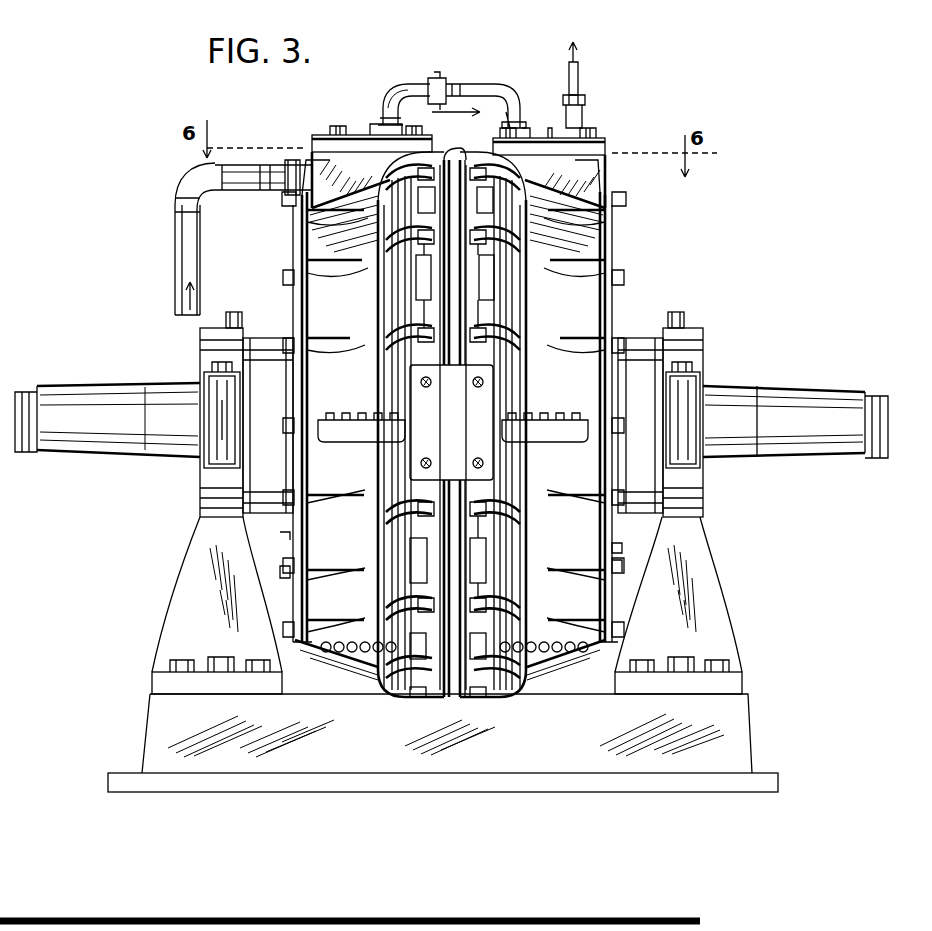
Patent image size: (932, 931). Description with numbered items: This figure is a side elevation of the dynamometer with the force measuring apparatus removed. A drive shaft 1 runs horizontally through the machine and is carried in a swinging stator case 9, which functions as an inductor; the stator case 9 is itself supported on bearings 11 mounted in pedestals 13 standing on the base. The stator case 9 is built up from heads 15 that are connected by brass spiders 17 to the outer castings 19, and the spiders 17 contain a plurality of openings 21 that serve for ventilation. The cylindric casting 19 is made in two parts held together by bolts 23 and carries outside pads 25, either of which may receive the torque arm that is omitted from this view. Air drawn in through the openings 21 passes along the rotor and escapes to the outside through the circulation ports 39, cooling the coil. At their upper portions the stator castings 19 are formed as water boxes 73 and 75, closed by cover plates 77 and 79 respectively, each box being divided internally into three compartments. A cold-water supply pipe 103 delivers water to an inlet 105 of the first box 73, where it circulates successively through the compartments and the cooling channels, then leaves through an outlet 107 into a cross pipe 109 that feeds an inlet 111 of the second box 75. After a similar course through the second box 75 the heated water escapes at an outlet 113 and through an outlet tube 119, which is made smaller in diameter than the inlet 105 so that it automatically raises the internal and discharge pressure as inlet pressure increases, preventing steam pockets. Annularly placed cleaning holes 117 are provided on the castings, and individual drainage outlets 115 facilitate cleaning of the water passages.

The drive shaft 1 is at (800, 398).
The stator case 9 is at (614, 325).
The bearings 11 is at (200, 472).
The pedestals 13 is at (190, 610).
The heads 15 is at (262, 510).
The brass spiders 17 is at (284, 555).
The outer castings 19 is at (603, 250).
The openings 21 is at (288, 277).
The bolts 23 is at (424, 300).
The outside pads 25 is at (462, 382).
The circulation ports 39 is at (420, 195).
The box 73 is at (320, 190).
The box 75 is at (597, 183).
The cover plate 77 is at (338, 146).
The cover plate 79 is at (602, 150).
The cold-water supply pipe 103 is at (180, 230).
The inlet 105 is at (304, 158).
The outlet 107 is at (384, 118).
The cross pipe 109 is at (463, 78).
The inlet 111 is at (534, 128).
The outlet 113 is at (584, 118).
The drainage outlets 115 is at (365, 655).
The cleaning holes 117 is at (372, 413).
The outlet tube 119 is at (580, 70).